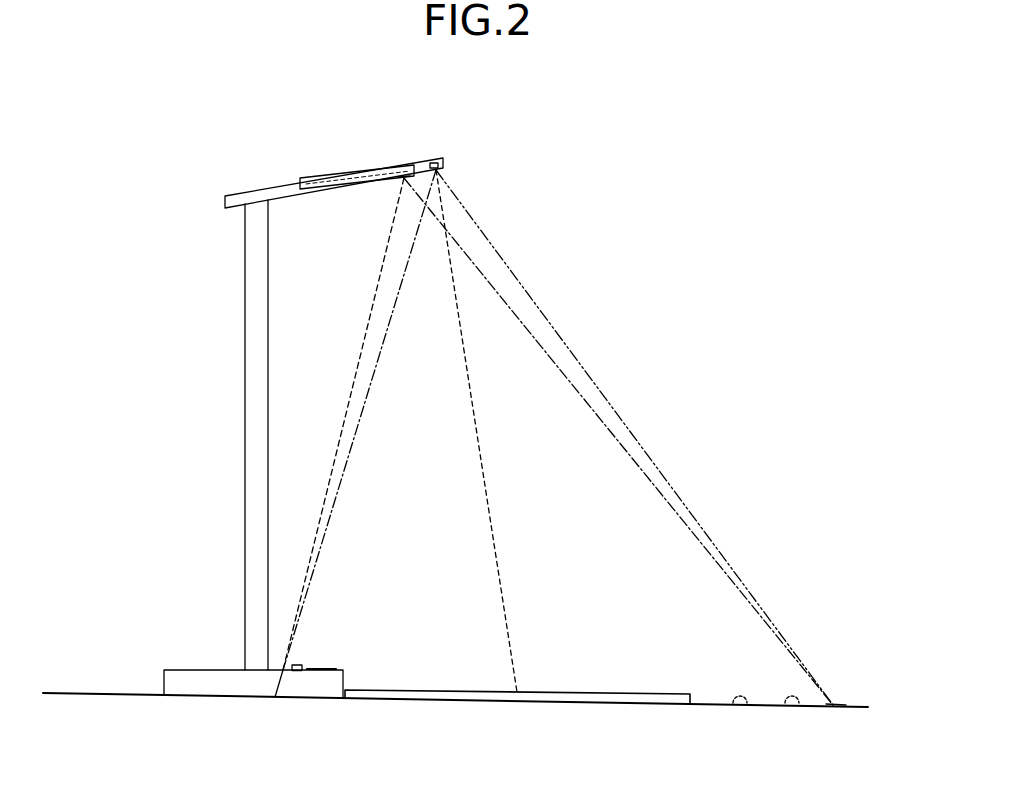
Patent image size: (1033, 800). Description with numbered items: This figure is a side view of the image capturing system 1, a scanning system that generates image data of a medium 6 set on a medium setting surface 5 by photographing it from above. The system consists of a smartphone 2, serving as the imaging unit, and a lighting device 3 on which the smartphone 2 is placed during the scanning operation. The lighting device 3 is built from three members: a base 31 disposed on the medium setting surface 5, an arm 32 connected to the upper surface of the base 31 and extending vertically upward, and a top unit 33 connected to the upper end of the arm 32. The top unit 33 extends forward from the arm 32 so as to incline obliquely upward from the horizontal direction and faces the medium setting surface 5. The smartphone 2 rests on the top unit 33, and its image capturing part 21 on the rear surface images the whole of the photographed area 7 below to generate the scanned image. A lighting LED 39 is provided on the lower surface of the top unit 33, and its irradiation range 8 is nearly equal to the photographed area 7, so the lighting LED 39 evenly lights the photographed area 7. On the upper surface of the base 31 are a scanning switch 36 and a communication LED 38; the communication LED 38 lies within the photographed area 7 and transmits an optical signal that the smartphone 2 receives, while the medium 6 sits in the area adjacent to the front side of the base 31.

The image capturing system 1 is at (690, 128).
The smartphone 2 is at (411, 164).
The image capturing part 21 is at (441, 162).
The lighting device 3 is at (236, 196).
The top unit 33 is at (263, 196).
The lighting LED 39 is at (400, 180).
The arm 32 is at (250, 326).
The base 31 is at (191, 670).
The communication LED 38 is at (299, 665).
The scanning switch 36 is at (326, 668).
The medium 6 is at (576, 690).
The medium setting surface 5 is at (842, 703).
The photographed area 7 is at (742, 706).
The irradiation range 8 is at (793, 706).